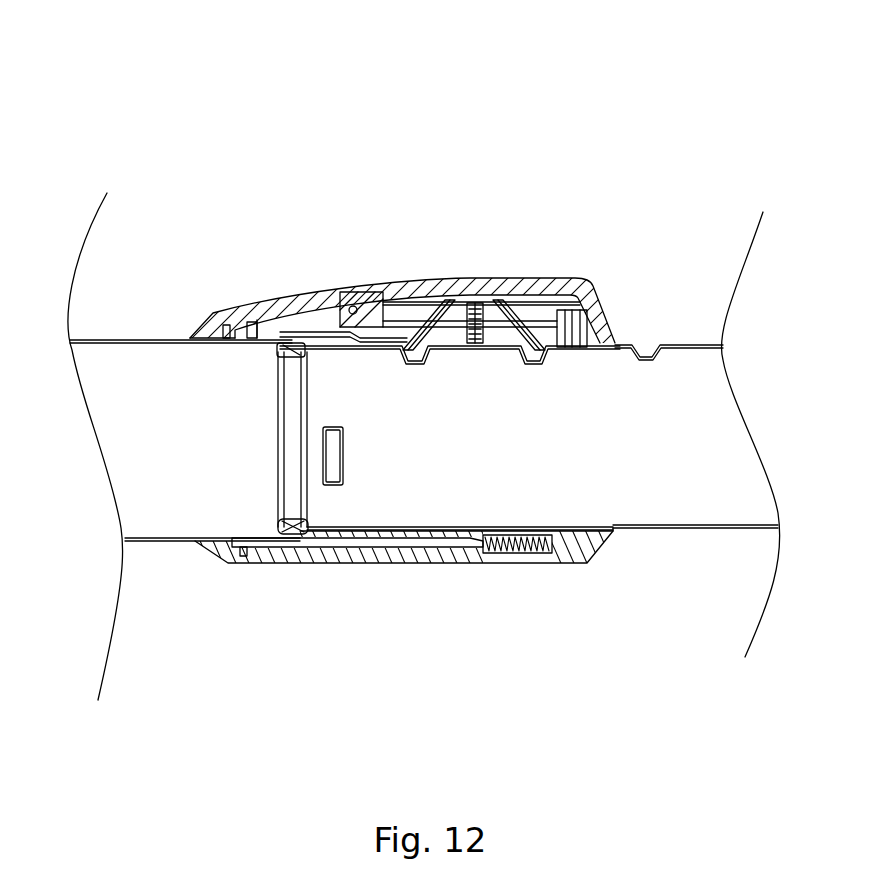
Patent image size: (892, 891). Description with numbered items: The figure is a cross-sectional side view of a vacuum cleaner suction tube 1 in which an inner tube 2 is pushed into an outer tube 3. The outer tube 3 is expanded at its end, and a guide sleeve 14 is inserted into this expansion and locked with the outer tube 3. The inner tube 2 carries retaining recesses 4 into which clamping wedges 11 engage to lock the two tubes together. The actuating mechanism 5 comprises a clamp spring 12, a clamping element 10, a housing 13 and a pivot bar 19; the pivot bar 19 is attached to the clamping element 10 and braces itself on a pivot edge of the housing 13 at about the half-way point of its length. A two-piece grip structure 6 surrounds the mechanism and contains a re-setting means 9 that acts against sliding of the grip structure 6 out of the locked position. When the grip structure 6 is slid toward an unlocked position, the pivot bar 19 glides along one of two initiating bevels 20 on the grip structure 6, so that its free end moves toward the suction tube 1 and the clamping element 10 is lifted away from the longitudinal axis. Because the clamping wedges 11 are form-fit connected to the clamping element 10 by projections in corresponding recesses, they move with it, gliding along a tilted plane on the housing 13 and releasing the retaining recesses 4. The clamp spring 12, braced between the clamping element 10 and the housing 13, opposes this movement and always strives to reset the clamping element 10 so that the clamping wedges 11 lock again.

The vacuum cleaner suction tube 1 is at (630, 168).
The inner tube 2 is at (666, 529).
The outer tube 3 is at (152, 542).
The retaining recesses 4 is at (648, 353).
The actuating mechanism 5 is at (433, 268).
The grip structure 6 is at (466, 301).
The re-setting means 9 is at (560, 564).
The clamping element 10 is at (456, 339).
The clamping wedges 11 is at (420, 361).
The clamp spring 12 is at (490, 297).
The housing 13 is at (437, 302).
The guide sleeve 14 is at (421, 541).
The pivot bar 19 is at (392, 300).
The initiating bevels 20 is at (345, 318).